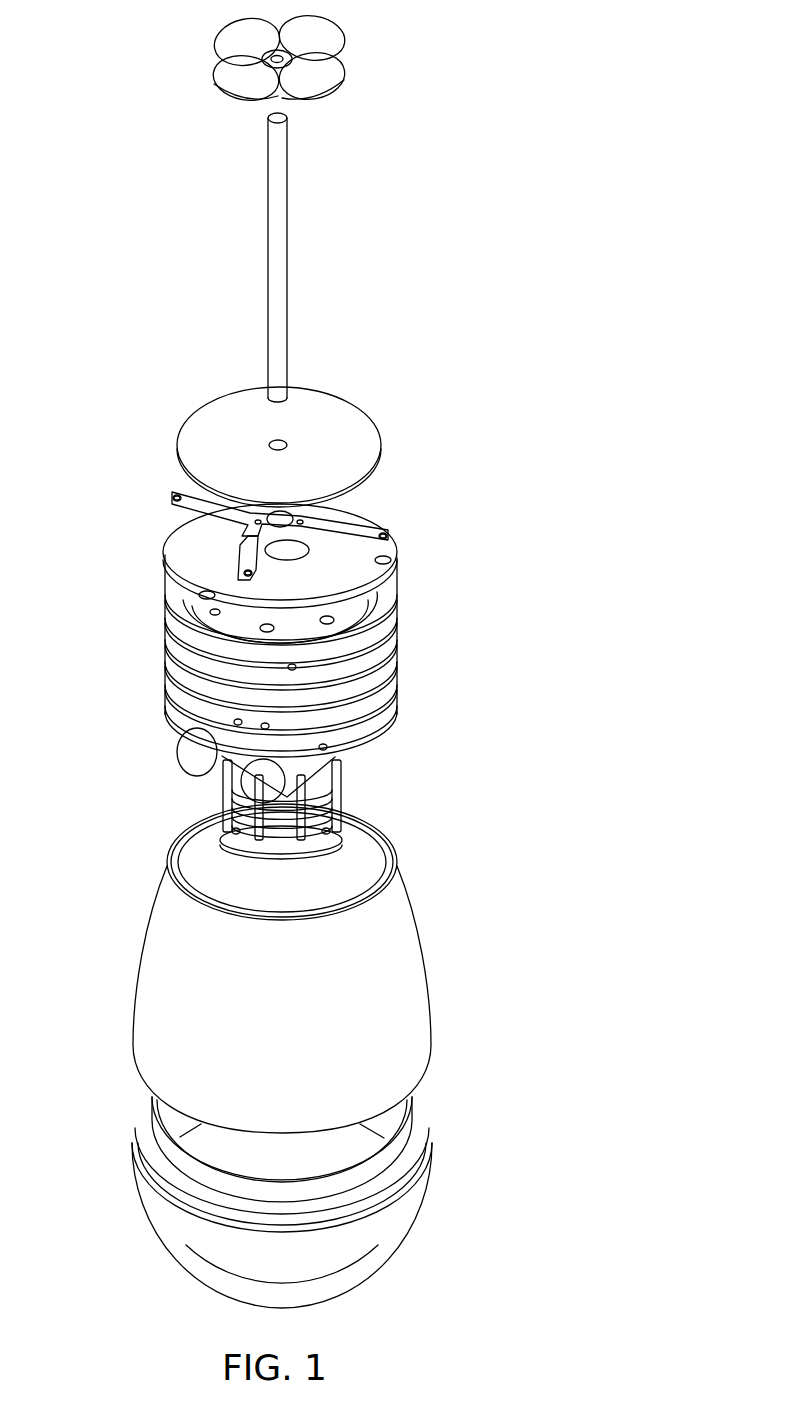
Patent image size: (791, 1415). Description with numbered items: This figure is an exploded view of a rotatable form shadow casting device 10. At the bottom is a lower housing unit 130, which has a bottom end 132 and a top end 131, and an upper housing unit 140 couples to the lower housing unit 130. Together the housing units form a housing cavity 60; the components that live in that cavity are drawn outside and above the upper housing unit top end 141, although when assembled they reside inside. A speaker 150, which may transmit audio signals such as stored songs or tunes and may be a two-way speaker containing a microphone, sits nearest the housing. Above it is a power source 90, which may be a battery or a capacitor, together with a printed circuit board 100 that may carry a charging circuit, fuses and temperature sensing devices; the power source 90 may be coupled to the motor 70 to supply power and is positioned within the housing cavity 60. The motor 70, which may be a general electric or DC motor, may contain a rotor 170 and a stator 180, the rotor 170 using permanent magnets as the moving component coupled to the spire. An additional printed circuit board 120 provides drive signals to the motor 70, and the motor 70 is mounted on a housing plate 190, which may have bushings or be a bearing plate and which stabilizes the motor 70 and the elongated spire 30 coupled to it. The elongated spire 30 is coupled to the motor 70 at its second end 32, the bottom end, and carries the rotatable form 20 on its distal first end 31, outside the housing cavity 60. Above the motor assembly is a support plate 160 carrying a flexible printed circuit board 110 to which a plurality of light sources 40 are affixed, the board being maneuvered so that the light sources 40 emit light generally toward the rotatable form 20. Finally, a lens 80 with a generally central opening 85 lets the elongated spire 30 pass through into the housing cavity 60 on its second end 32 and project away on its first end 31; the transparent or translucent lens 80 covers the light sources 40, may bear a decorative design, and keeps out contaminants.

The rotatable form shadow casting device 10 is at (588, 453).
The rotatable form 20 is at (328, 42).
The elongated spire 30 is at (288, 222).
The elongated spire first end 31 is at (290, 113).
The elongated spire second end 32 is at (290, 382).
The light sources 40 is at (173, 489).
The housing cavity 60 is at (346, 843).
The motor 70 is at (375, 618).
The lens 80 is at (373, 422).
The opening 85 is at (276, 440).
The power source 90 is at (192, 752).
The printed circuit board 100 is at (182, 722).
The flexible printed circuit board 110 is at (180, 500).
The additional printed circuit board 120 is at (382, 620).
The lower housing unit 130 is at (133, 1187).
The top end 131 is at (414, 1105).
The bottom end 132 is at (378, 1272).
The upper housing unit 140 is at (136, 970).
The upper housing unit top end 141 is at (392, 842).
The speaker 150 is at (215, 824).
The support plate 160 is at (390, 566).
The rotor 170 is at (382, 650).
The stator 180 is at (370, 674).
The housing plate 190 is at (168, 690).